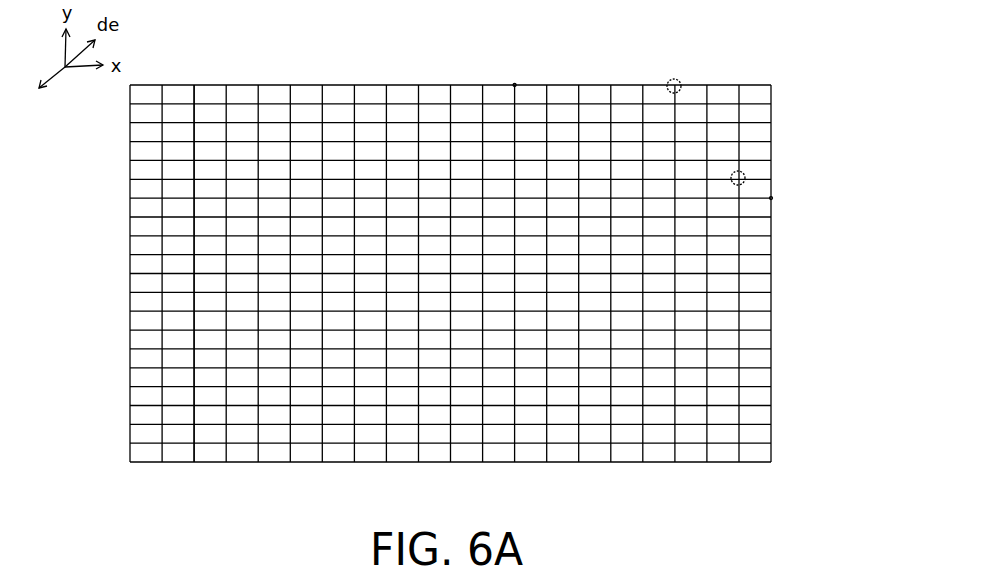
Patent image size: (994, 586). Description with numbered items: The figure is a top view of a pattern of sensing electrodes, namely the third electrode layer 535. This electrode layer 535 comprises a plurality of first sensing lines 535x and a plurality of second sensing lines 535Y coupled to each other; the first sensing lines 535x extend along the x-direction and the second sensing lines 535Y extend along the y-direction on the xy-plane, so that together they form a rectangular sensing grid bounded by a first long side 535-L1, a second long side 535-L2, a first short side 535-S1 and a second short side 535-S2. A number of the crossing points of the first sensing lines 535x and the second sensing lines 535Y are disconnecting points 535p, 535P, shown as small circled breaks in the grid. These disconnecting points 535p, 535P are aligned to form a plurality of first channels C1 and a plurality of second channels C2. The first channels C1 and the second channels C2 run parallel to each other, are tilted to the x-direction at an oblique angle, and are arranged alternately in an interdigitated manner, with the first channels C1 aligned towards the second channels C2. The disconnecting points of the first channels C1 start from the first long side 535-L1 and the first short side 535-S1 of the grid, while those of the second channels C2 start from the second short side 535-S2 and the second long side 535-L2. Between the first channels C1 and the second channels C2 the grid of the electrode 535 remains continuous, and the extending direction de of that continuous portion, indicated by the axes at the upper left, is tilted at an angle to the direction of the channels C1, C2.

The third electrode layer 535 is at (463, 255).
The first long side 535-L1 is at (400, 84).
The second long side 535-L2 is at (402, 463).
The first short side 535-S1 is at (128, 207).
The second short side 535-S2 is at (773, 340).
The first sensing lines 535x is at (143, 142).
The second sensing lines 535Y is at (192, 453).
The first channels C1 is at (514, 84).
The second channels C2 is at (770, 198).
The disconnecting points 535p is at (677, 79).
The disconnecting points 535P is at (744, 173).